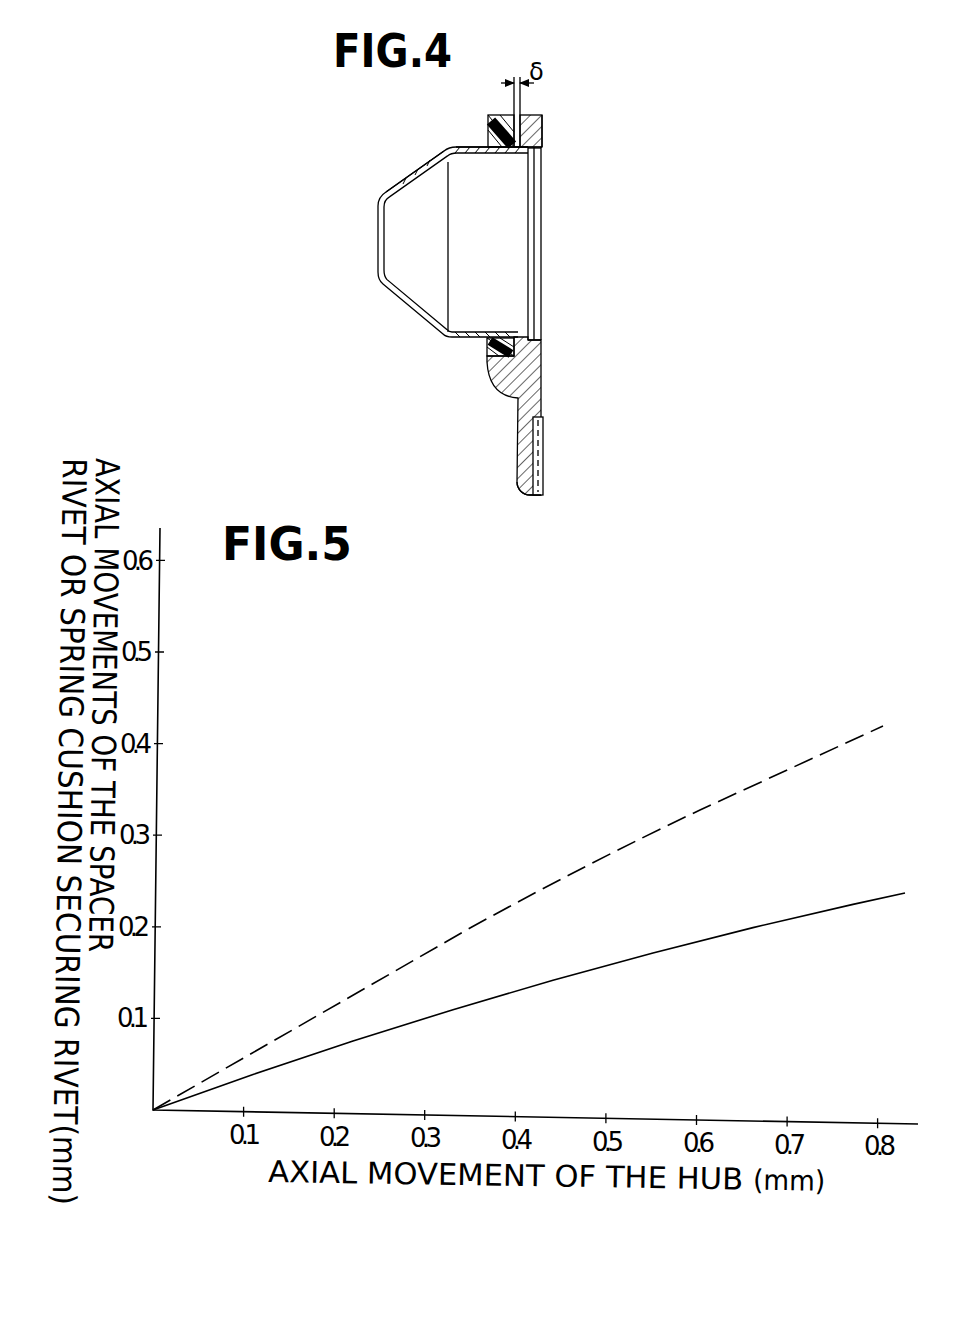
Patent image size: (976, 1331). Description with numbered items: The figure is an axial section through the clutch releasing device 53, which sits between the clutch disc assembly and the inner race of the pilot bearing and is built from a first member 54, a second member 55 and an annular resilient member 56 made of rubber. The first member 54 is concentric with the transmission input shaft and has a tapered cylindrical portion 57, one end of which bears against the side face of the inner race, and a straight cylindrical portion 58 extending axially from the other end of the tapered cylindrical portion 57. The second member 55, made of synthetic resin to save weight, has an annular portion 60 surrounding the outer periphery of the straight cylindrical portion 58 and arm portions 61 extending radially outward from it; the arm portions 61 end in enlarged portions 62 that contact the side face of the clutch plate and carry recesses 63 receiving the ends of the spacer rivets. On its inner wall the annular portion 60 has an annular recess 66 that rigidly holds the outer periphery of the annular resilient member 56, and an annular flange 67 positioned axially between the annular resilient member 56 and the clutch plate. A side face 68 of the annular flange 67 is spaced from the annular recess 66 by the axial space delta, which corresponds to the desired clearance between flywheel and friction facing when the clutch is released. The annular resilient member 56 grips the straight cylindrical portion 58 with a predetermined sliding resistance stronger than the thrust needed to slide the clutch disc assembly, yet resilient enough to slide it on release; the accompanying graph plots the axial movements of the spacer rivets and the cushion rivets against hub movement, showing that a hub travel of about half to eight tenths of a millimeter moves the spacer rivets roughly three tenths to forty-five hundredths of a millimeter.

The clutch releasing device 53 is at (548, 122).
The first member 54 is at (382, 189).
The second member 55 is at (546, 349).
The annular resilient member 56 is at (493, 347).
The tapered cylindrical portion 57 is at (410, 177).
The straight cylindrical portion 58 is at (477, 147).
The annular portion 60 is at (522, 120).
The arm portions 61 is at (533, 378).
The enlarged portions 62 is at (541, 496).
The recesses 63 is at (543, 458).
The annular recess 66 is at (488, 133).
The annular flange 67 is at (538, 148).
The side face 68 is at (538, 139).